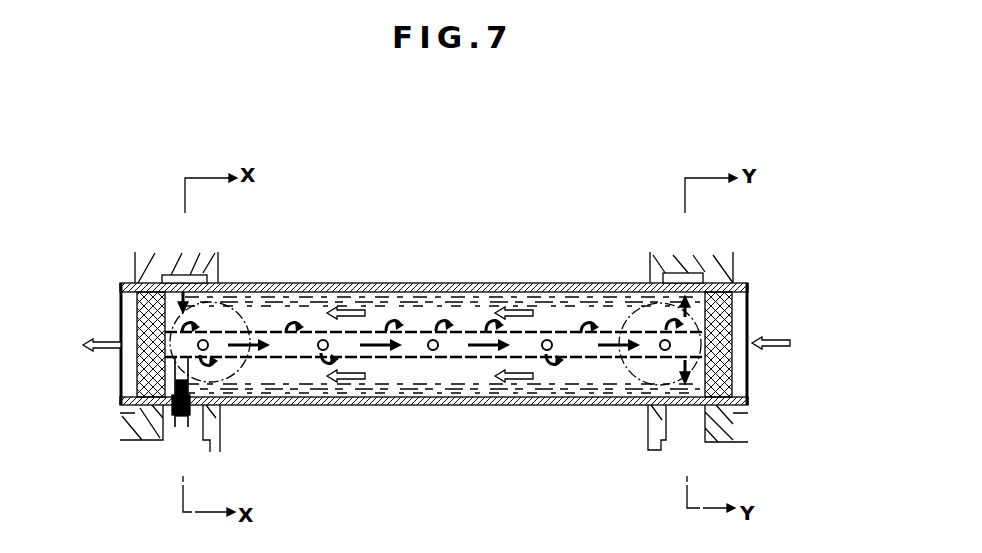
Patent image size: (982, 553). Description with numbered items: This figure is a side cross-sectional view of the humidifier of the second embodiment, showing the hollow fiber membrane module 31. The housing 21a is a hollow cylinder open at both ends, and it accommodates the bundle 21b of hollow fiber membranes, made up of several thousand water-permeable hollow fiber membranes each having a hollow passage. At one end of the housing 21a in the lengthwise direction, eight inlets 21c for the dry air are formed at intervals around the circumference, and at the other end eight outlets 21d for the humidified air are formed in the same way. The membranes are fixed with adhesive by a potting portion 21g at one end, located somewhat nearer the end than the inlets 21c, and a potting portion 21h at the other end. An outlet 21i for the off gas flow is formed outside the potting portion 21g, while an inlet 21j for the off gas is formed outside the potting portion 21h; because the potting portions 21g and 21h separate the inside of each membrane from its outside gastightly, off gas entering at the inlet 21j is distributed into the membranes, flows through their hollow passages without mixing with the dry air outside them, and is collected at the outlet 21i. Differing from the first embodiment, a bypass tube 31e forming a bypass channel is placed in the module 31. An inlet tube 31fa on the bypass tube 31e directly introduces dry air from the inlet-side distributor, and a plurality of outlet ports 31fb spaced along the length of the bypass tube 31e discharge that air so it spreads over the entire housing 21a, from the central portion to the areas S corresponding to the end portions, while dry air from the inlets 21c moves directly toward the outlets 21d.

The housing 21a is at (403, 283).
The bundle of hollow fiber membranes 21b is at (438, 406).
The inlets for dry air 21c is at (220, 254).
The outlets for humidified air 21d is at (705, 281).
The potting portion at one end 21g is at (120, 284).
The potting portion at another end 21h is at (738, 325).
The outlet for off gas flow 21i is at (118, 318).
The inlet for off gas 21j is at (752, 366).
The hollow fiber membrane module 31 is at (496, 234).
The bypass tube 31e is at (333, 398).
The inlet tube 31fa is at (200, 385).
The outlet ports 31fb is at (303, 283).
The areas corresponding to end portions S is at (632, 303).